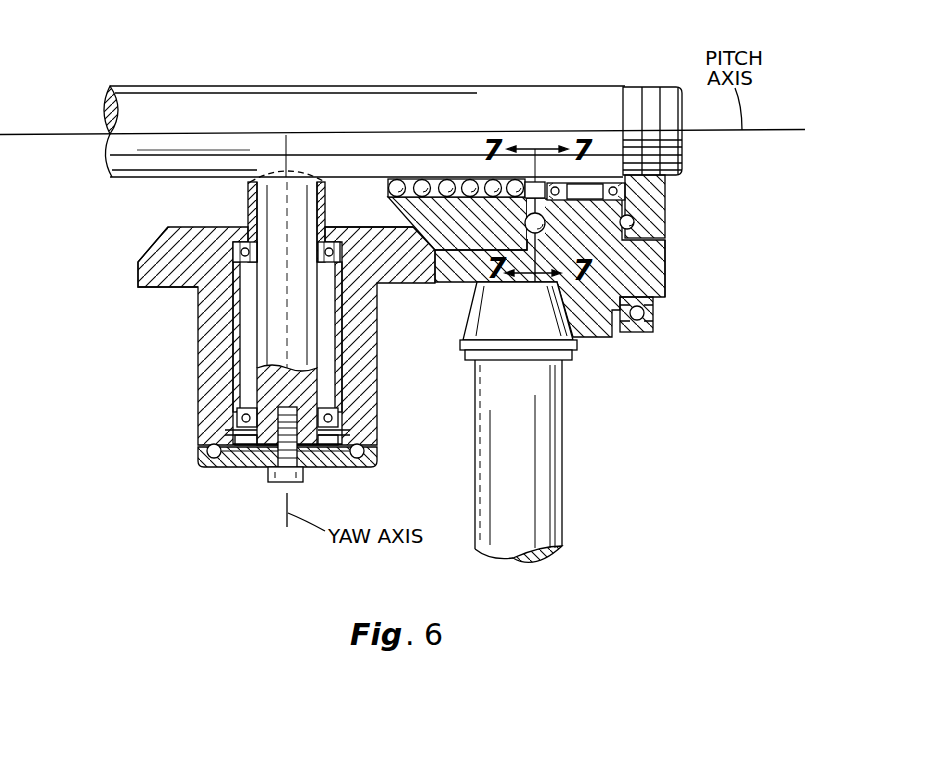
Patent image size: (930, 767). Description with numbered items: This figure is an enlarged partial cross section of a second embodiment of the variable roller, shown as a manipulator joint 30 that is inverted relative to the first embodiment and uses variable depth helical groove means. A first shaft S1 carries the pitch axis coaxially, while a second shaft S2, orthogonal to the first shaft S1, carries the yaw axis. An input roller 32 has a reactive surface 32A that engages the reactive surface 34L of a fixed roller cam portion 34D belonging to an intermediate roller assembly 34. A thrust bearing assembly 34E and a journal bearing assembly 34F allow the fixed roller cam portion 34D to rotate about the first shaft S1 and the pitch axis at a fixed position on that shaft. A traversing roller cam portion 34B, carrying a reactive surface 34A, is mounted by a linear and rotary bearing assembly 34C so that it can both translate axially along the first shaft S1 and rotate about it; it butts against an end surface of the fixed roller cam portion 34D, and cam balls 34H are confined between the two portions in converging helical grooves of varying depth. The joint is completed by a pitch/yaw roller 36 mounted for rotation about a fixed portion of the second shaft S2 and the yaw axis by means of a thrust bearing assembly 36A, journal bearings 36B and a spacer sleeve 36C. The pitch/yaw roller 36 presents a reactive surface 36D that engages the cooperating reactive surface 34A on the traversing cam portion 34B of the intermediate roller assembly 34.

The manipulator joint 30 is at (480, 66).
The first shaft S1 is at (137, 150).
The input roller 32 is at (527, 402).
The reactive surface 32A is at (464, 328).
The intermediate roller assembly 34 is at (643, 284).
The reactive surface 34A is at (400, 243).
The traversing roller cam portion 34B is at (459, 212).
The linear and rotary bearing assembly 34C is at (397, 178).
The fixed roller cam portion 34D is at (665, 252).
The thrust bearing assembly 34E is at (652, 215).
The journal bearing assembly 34F is at (588, 190).
The cam ball 34H is at (525, 225).
The reactive surface 34L is at (562, 302).
The pitch/yaw roller 36 is at (207, 297).
The thrust bearing assembly 36A is at (228, 461).
The journal bearing 36B is at (235, 248).
The spacer sleeve 36C is at (250, 200).
The reactive surface 36D is at (165, 242).
The second shaft S2 is at (298, 326).